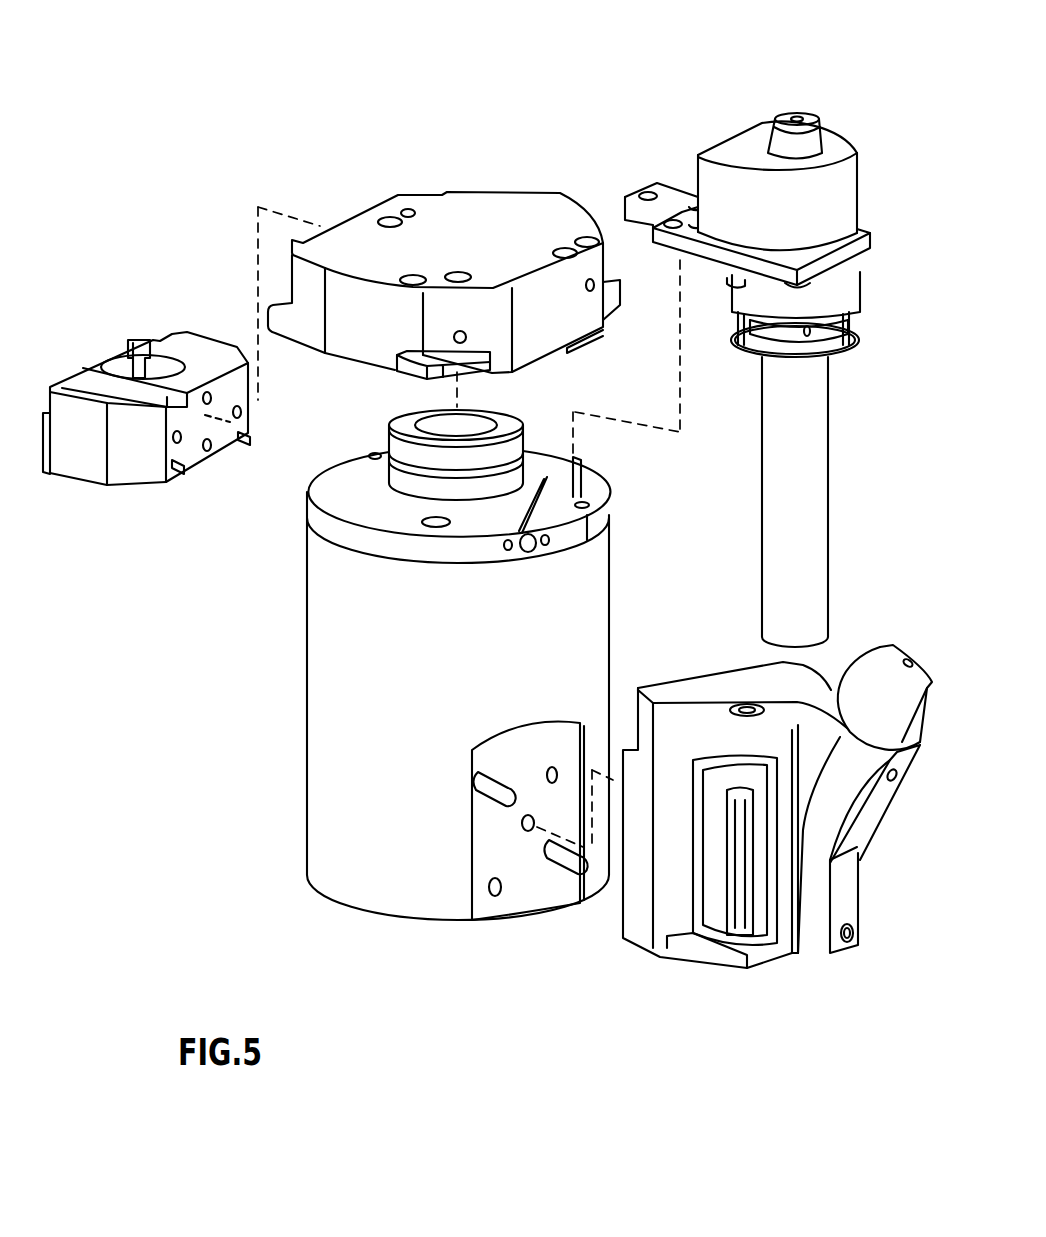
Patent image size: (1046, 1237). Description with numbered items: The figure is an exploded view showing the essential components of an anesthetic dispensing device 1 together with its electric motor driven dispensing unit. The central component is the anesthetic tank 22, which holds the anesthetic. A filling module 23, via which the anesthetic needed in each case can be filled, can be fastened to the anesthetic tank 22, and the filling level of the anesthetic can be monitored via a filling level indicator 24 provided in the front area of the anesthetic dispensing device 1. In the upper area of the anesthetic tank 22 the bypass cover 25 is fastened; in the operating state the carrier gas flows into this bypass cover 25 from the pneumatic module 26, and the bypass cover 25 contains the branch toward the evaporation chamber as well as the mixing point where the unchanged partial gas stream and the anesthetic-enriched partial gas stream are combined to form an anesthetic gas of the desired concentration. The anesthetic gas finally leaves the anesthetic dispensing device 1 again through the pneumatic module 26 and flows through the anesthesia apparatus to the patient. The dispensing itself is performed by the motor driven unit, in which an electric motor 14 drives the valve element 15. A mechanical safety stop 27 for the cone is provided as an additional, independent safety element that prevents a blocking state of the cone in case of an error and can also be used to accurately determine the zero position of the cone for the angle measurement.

The anesthetic dispensing device 1 is at (197, 108).
The electric motor 14 is at (793, 443).
The valve element 15 is at (857, 196).
The anesthetic tank 22 is at (335, 665).
The filling module 23 is at (852, 803).
The filling level indicator 24 is at (725, 898).
The bypass cover 25 is at (453, 236).
The pneumatic module 26 is at (118, 464).
The safety stop 27 is at (825, 325).